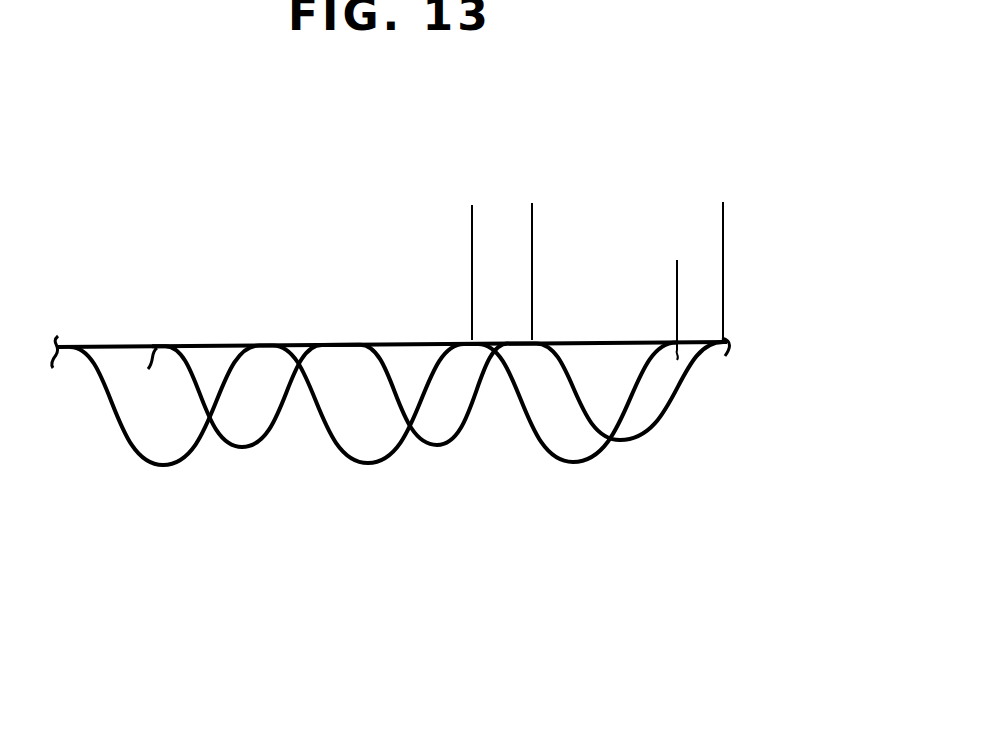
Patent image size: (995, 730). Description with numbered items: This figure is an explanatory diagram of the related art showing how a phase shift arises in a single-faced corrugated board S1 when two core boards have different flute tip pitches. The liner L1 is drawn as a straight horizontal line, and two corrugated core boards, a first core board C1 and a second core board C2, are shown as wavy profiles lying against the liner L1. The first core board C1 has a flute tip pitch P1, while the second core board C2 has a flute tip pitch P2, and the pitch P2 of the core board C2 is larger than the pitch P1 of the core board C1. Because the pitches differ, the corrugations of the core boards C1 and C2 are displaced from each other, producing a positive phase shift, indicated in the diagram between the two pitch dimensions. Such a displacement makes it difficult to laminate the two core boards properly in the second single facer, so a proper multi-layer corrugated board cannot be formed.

The liner L1 is at (115, 350).
The core board C1 is at (632, 442).
The core board C2 is at (537, 443).
The single-faced corrugated board S1 is at (738, 327).
The flute tip pitch P1 is at (723, 220).
The flute tip pitch P2 is at (472, 278).